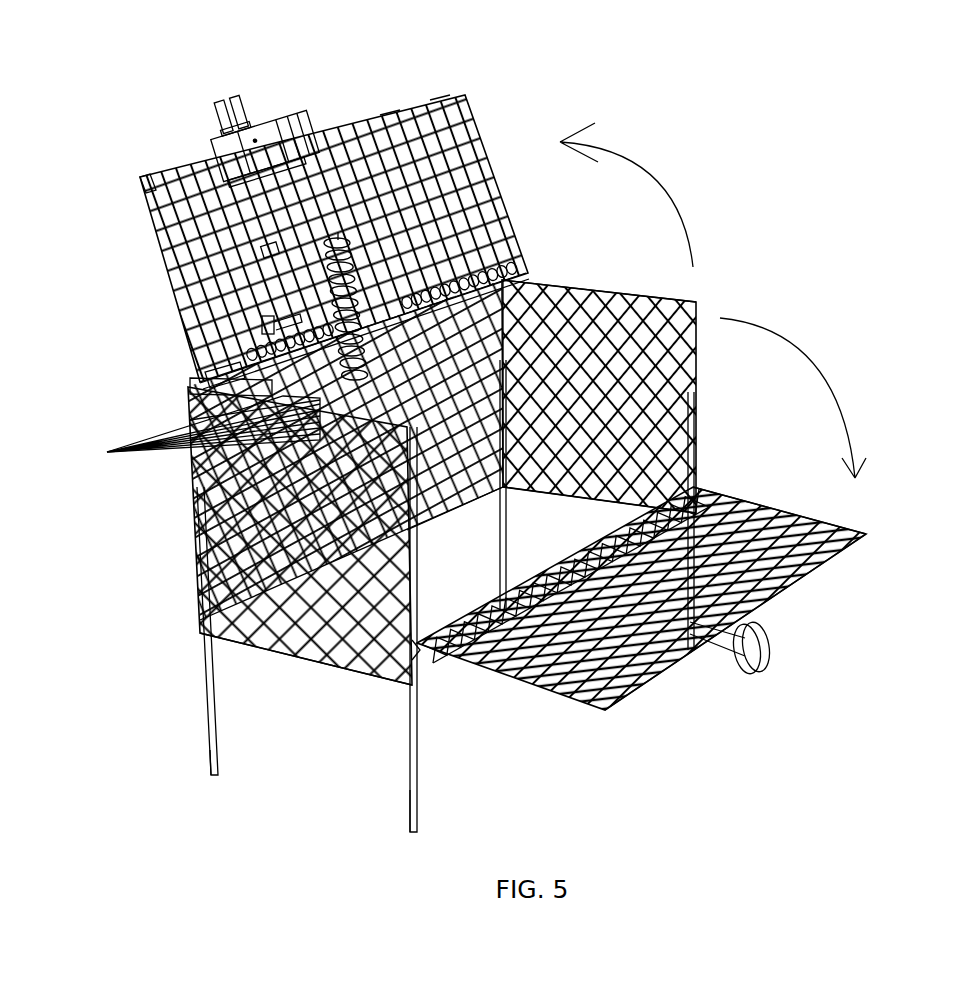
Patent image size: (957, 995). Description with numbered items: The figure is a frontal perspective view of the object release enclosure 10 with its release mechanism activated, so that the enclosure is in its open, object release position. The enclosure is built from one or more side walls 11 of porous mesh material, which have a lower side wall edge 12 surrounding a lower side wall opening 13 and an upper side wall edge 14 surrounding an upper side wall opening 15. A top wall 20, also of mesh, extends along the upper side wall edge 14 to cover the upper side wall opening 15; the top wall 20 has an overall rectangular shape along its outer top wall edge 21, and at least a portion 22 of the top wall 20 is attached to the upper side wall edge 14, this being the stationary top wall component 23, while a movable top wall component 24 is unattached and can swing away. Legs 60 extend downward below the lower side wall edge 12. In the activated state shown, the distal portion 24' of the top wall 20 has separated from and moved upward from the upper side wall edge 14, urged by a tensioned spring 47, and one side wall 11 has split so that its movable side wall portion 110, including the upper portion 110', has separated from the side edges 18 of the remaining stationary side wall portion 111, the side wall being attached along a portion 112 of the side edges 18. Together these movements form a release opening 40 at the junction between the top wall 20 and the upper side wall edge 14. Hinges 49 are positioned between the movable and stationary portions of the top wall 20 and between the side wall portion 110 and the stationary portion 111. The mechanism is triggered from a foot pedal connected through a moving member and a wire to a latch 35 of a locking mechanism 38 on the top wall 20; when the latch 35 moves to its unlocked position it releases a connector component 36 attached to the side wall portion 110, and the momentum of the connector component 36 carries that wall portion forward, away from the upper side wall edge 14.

The object release enclosure 10 is at (864, 110).
The side wall 11 is at (625, 677).
The lower side wall edge 12 is at (305, 665).
The lower side wall opening 13 is at (555, 525).
The upper side wall edge 14 is at (610, 285).
The upper side wall opening 15 is at (565, 292).
The side wall side edge 18 is at (695, 455).
The top wall 20 is at (455, 118).
The outer top wall edge 21 is at (140, 182).
The portion of top wall attached to upper side wall edge 22 is at (520, 280).
The stationary top wall component 23 is at (215, 377).
The movable top wall component 24 is at (368, 75).
The distal portion of top wall 24' is at (440, 68).
The latch 35 is at (238, 105).
The connector component 36 is at (762, 650).
The locking mechanism 38 is at (280, 112).
The release opening 40 is at (697, 290).
The spring 47 is at (345, 235).
The hinge 49 is at (445, 285).
The leg 60 is at (412, 810).
The movable side wall portion 110 is at (816, 535).
The upper portion of side wall 110' is at (761, 622).
The stationary side wall portion 111 is at (435, 665).
The portion of side wall side edge 112 is at (410, 657).